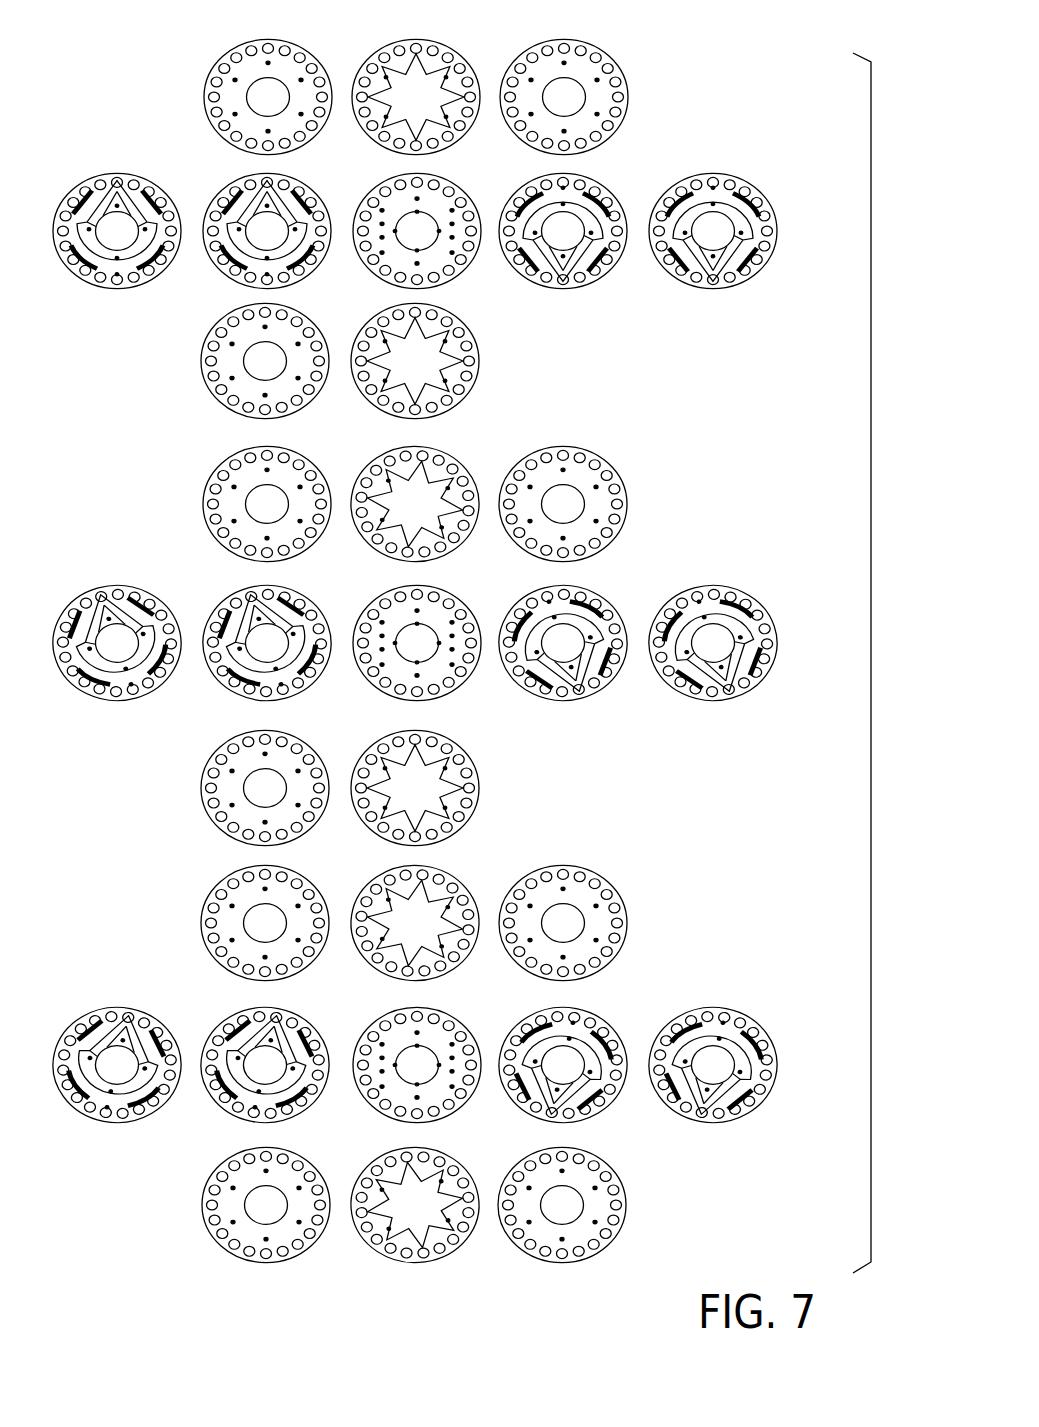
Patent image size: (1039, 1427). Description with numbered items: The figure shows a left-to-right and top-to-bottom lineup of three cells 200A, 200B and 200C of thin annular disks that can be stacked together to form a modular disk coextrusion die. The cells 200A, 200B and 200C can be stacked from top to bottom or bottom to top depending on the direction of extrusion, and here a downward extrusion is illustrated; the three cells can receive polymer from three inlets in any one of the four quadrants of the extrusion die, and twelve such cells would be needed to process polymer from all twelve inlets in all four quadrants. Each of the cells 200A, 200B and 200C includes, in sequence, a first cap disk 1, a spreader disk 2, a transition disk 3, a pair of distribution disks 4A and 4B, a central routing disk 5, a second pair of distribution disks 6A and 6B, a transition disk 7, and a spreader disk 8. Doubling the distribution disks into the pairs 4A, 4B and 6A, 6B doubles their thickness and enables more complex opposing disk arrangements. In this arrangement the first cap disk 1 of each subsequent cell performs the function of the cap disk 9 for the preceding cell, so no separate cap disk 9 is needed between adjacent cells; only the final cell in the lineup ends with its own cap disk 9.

The first cap disk 1 is at (252, 40).
The spreader disk 2 is at (405, 40).
The transition disk 3 is at (548, 40).
The distribution disk 4A is at (97, 176).
The distribution disk 4B is at (245, 176).
The central routing disk 5 is at (455, 278).
The distribution disk 6A is at (565, 292).
The distribution disk 6B is at (713, 292).
The transition disk 7 is at (205, 372).
The spreader disk 8 is at (468, 386).
The cap disk 9 is at (568, 1264).
The cell 200A is at (672, 126).
The cell 200B is at (670, 522).
The cell 200C is at (690, 924).